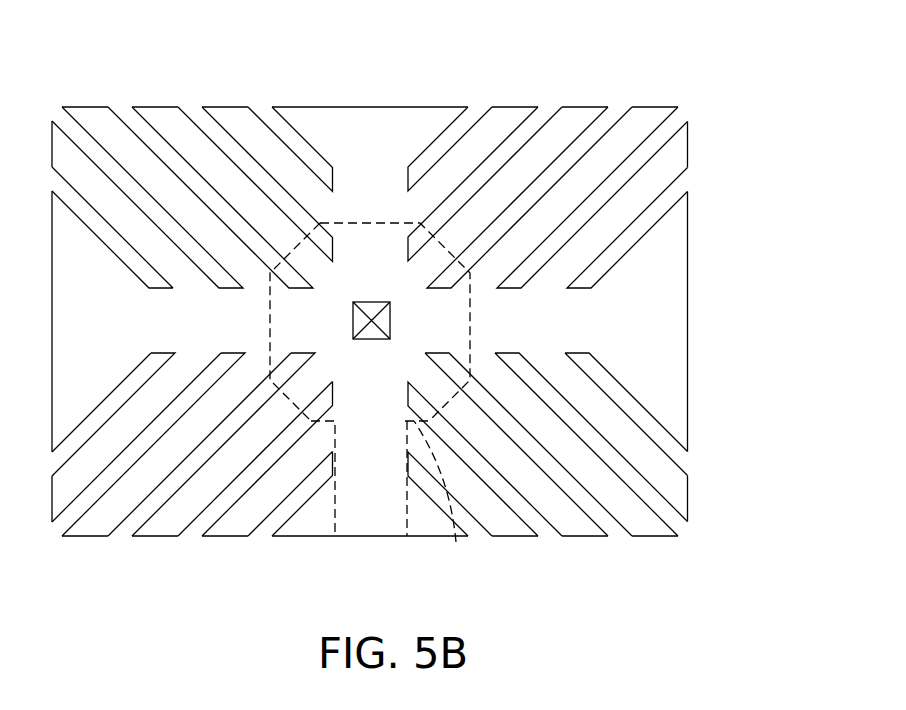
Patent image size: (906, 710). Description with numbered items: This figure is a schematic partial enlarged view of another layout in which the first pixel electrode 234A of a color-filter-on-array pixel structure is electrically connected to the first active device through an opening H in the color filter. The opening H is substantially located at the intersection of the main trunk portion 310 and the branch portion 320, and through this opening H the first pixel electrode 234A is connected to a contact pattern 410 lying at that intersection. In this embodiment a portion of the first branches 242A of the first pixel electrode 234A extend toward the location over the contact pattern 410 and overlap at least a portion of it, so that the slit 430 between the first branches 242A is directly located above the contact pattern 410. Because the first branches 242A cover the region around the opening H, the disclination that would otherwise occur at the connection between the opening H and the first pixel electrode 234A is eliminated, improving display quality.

The main trunk portion 310 is at (371, 128).
The branch portion 320 is at (666, 312).
The slit 430 is at (459, 267).
The first branches 242A is at (571, 117).
The first pixel electrode 234A is at (682, 168).
The opening H is at (373, 301).
The contact pattern 410 is at (456, 542).